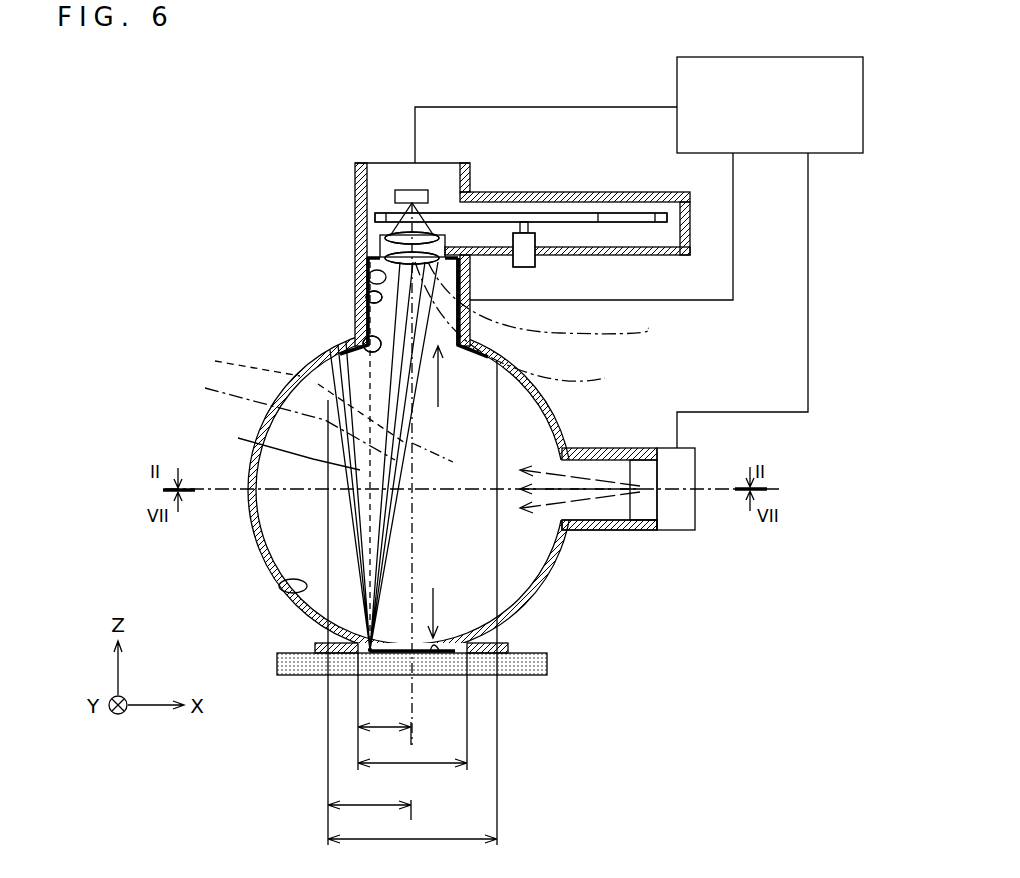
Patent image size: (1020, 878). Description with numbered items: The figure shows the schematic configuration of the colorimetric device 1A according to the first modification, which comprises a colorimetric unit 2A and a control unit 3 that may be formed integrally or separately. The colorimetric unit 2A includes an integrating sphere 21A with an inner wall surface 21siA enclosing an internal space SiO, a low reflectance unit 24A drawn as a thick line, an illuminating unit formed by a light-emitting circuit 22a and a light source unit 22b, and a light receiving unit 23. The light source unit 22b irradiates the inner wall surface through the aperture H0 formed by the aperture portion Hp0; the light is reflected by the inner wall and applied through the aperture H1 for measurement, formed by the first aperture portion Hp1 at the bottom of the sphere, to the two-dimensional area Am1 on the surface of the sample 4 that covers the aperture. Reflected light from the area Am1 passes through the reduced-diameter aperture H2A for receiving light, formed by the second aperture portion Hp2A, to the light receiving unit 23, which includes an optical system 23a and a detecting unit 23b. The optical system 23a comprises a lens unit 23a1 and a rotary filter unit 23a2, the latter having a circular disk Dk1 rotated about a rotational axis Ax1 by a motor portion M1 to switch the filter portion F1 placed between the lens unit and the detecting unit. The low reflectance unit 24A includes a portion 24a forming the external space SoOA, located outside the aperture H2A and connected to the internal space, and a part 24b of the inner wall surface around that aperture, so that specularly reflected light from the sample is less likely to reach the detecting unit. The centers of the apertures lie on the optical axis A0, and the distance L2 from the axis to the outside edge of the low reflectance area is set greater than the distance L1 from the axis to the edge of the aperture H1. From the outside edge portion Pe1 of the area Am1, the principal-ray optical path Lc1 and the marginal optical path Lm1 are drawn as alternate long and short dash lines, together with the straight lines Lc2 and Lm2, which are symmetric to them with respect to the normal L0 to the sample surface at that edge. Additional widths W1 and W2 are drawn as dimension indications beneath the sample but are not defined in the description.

The colorimetric device 1A is at (266, 116).
The colorimetric unit 2A is at (397, 150).
The control unit 3 is at (830, 57).
The sample 4 is at (533, 676).
The integrating sphere 21A is at (296, 368).
The inner wall surface 21siA is at (300, 595).
The light-emitting circuit 22a is at (676, 532).
The light source unit 22b is at (645, 532).
The light receiving unit 23 is at (340, 170).
The optical system 23a is at (220, 220).
The lens unit 23a1 is at (355, 240).
The filter unit 23a2 is at (355, 215).
The detecting unit 23b is at (355, 190).
The low reflectance unit 24A is at (355, 283).
The portion forming external space 24a is at (355, 308).
The part of inner wall surface 24b is at (355, 334).
The filter portion F1 is at (433, 213).
The circular disk Dk1 is at (578, 213).
The rotational axis Ax1 is at (523, 222).
The motor portion M1 is at (535, 262).
The external space SoOA is at (522, 268).
The optical path of principal ray Lc1 is at (556, 301).
The optical path of marginal ray Lm1 is at (533, 326).
The normal L0 is at (295, 396).
The straight line Lc2 is at (280, 418).
The straight line Lm2 is at (278, 448).
The aperture H0 is at (555, 463).
The aperture portion Hp0 is at (562, 520).
The second aperture portion Hp2A is at (461, 350).
The aperture for receiving light H2A is at (438, 394).
The optical axis A0 is at (440, 465).
The internal space SiO is at (302, 548).
The outside edge portion Pe1 is at (370, 657).
The two-dimensional area Am1 is at (433, 655).
The aperture for measurement H1 is at (434, 601).
The first aperture portion Hp1 is at (467, 641).
The distance L1 is at (384, 740).
The distance L2 is at (369, 818).
The width W1 is at (412, 777).
The width W2 is at (412, 853).